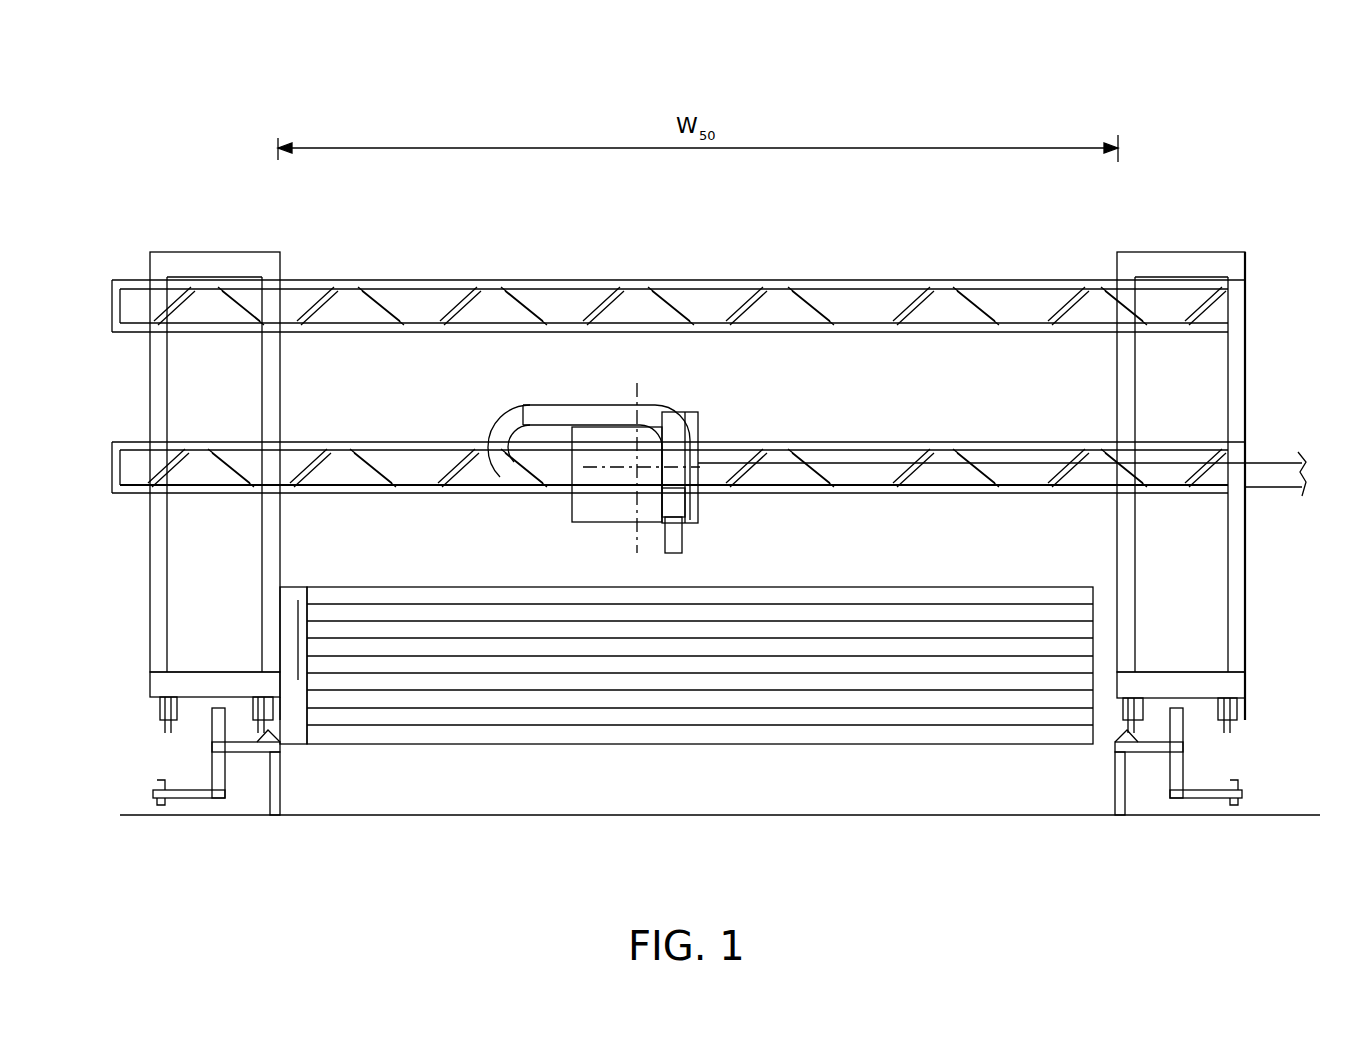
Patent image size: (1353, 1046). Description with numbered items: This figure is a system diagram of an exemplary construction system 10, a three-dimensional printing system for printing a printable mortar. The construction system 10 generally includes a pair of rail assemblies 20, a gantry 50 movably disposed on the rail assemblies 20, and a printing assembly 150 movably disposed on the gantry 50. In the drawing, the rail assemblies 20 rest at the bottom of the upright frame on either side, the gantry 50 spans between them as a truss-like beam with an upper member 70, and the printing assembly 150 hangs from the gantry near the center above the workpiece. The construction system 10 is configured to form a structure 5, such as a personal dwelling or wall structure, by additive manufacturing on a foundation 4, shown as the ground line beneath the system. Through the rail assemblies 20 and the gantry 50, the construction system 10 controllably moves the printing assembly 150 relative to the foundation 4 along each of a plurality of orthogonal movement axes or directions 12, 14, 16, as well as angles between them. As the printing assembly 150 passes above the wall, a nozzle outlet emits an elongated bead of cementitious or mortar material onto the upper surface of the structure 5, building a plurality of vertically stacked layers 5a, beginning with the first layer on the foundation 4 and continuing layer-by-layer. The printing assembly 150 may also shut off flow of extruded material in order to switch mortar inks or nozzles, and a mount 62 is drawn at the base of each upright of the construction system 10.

The construction system 10 is at (287, 95).
The gantry 50 is at (479, 240).
The gantry beam 70 is at (966, 270).
The movement axis 14 is at (702, 462).
The movement axis 16 is at (650, 396).
The printing assembly 150 is at (572, 522).
The movement axis 12 is at (612, 526).
The structure 5 is at (348, 584).
The vertically stacked layers 5a is at (297, 598).
The wheels 62 is at (153, 700).
The rail assemblies 20 is at (202, 760).
The foundation 4 is at (516, 820).